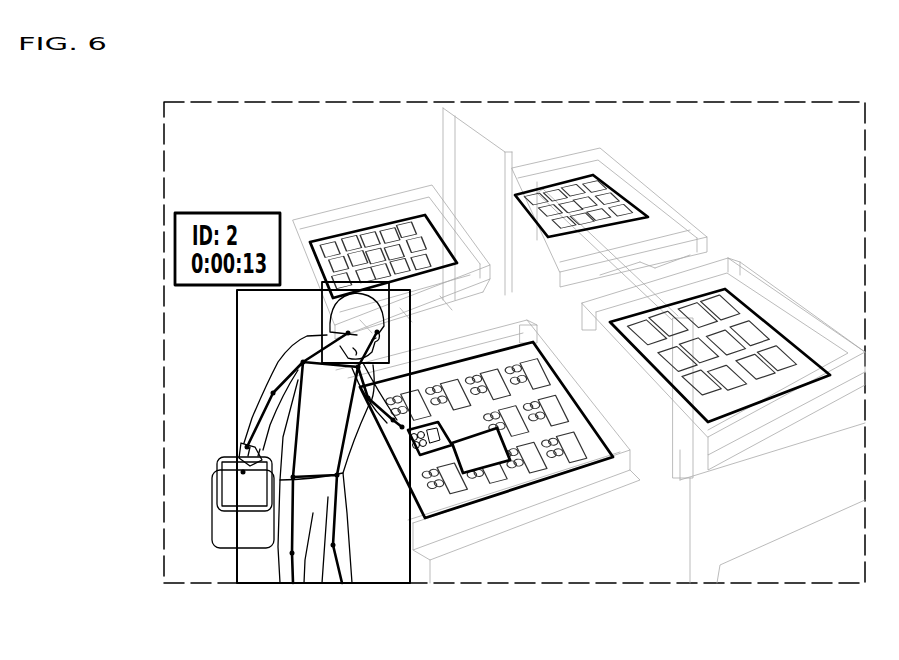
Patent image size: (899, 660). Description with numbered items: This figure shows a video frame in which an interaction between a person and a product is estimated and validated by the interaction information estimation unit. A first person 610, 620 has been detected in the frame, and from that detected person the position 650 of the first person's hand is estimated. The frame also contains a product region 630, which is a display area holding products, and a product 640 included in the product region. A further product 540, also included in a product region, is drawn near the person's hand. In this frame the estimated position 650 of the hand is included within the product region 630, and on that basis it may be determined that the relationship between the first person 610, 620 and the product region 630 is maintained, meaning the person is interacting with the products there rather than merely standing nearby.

The first person 610 is at (258, 372).
The first person 620 is at (238, 398).
The product region 630 is at (520, 487).
The product 640 is at (480, 473).
The position of the first person's hand 650 is at (240, 472).
The product 540 is at (418, 458).